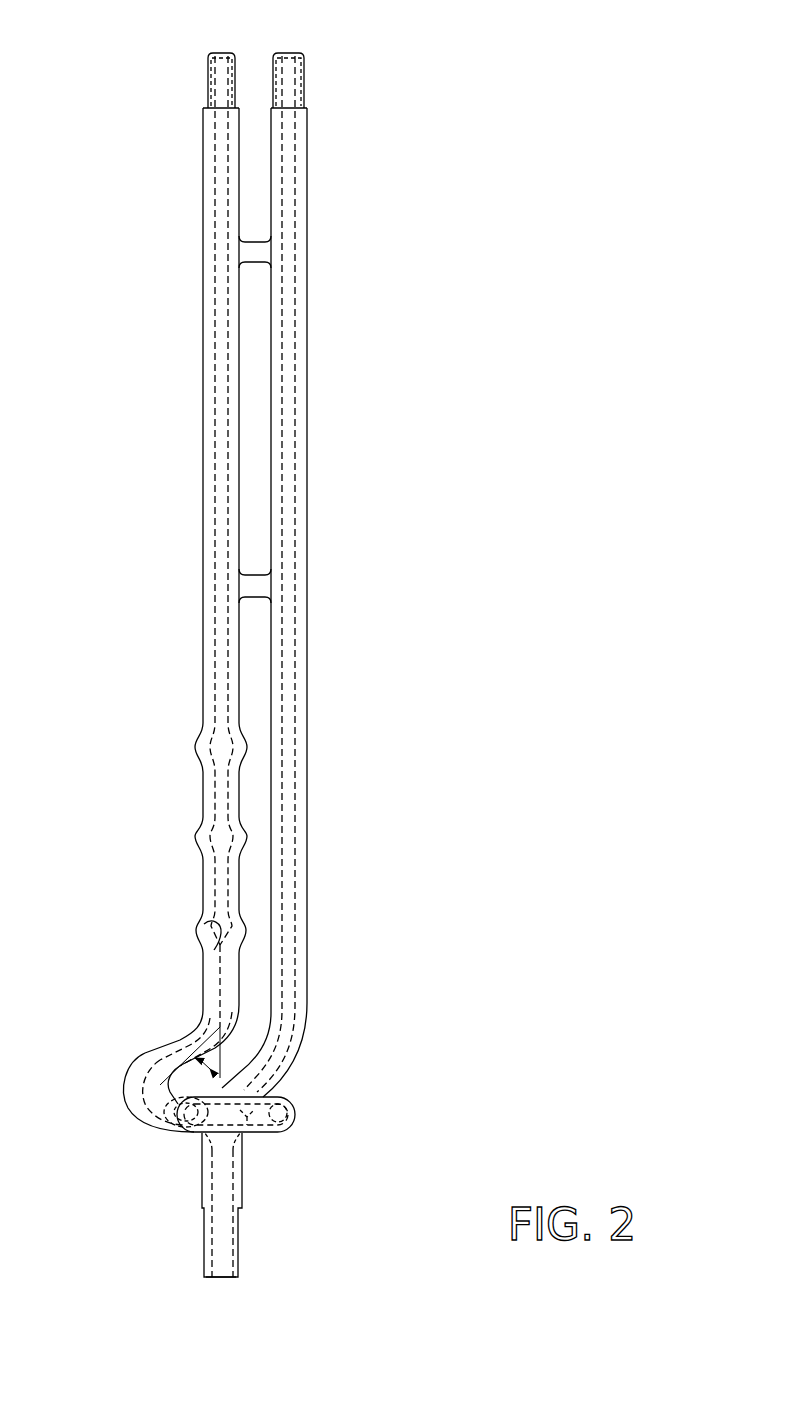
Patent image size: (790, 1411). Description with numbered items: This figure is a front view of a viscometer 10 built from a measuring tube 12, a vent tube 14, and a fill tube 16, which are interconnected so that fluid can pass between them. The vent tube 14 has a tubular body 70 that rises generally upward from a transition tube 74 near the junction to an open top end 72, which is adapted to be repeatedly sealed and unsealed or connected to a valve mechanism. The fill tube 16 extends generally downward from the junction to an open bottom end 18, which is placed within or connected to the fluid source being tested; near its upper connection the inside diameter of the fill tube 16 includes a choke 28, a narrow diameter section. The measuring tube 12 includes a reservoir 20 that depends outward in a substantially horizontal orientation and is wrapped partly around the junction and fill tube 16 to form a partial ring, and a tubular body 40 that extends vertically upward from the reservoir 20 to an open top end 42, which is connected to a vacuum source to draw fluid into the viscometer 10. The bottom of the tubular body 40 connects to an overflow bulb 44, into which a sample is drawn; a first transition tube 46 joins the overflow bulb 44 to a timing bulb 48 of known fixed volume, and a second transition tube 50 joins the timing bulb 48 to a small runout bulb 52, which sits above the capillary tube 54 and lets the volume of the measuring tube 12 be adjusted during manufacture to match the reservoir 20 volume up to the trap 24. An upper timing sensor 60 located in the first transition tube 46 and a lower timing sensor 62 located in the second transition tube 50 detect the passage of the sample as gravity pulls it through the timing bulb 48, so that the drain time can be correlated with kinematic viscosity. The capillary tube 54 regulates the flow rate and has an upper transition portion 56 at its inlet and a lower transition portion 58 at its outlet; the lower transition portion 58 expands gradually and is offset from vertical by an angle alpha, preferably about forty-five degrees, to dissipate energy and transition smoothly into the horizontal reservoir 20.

The viscometer 10 is at (232, 27).
The measuring tube 12 is at (196, 303).
The vent tube 14 is at (313, 312).
The fill tube 16 is at (205, 1246).
The open bottom end 18 is at (220, 1278).
The reservoir 20 is at (290, 1113).
The trap 24 is at (197, 1082).
The choke 28 is at (215, 1137).
The tubular body 40 is at (289, 679).
The open top end 42 is at (222, 53).
The overflow bulb 44 is at (247, 745).
The first transition tube 46 is at (240, 793).
The timing bulb 48 is at (247, 838).
The second transition tube 50 is at (240, 886).
The runout bulb 52 is at (237, 931).
The capillary tube 54 is at (190, 1025).
The upper transition portion 56 is at (212, 922).
The lower transition portion 58 is at (178, 1055).
The upper timing sensor 60 is at (213, 792).
The lower timing sensor 62 is at (213, 884).
The tubular body 70 is at (289, 425).
The open top end 72 is at (286, 53).
The transition tube 74 is at (278, 1048).
The angle of offset from vertical alpha is at (206, 1064).